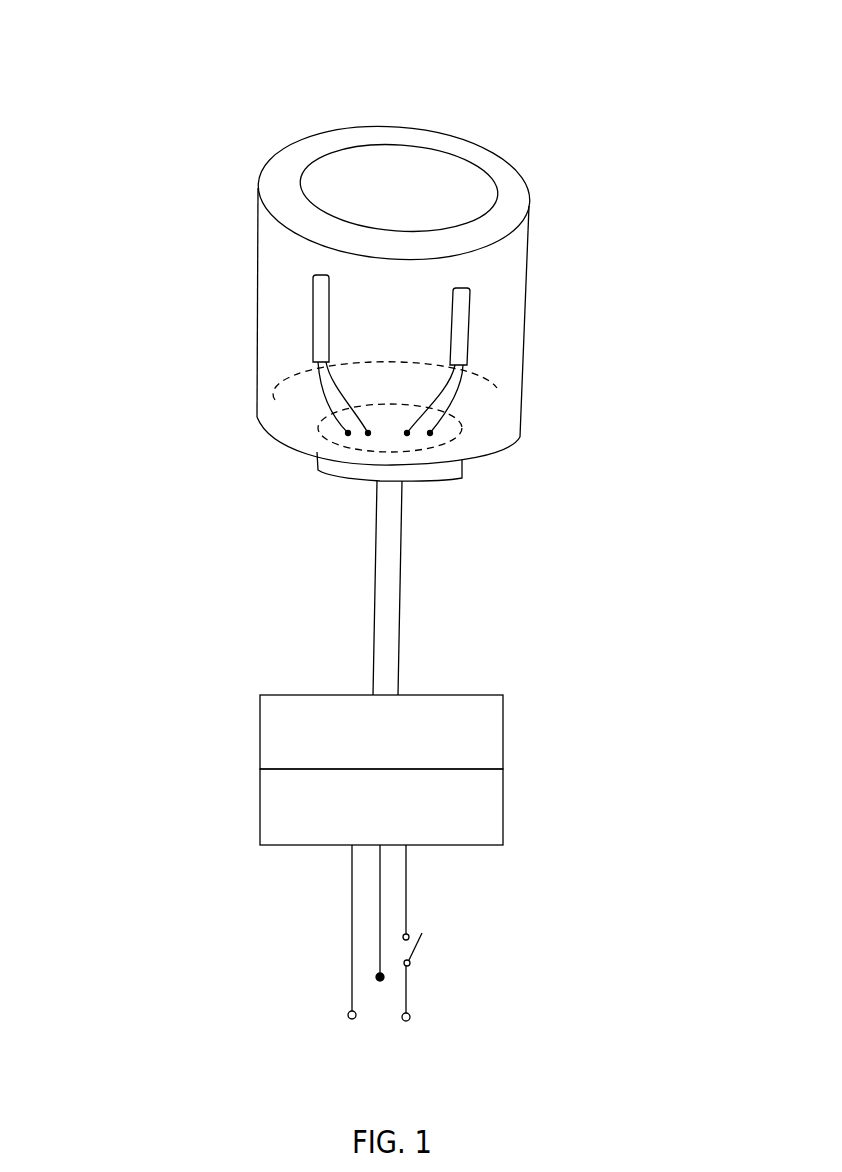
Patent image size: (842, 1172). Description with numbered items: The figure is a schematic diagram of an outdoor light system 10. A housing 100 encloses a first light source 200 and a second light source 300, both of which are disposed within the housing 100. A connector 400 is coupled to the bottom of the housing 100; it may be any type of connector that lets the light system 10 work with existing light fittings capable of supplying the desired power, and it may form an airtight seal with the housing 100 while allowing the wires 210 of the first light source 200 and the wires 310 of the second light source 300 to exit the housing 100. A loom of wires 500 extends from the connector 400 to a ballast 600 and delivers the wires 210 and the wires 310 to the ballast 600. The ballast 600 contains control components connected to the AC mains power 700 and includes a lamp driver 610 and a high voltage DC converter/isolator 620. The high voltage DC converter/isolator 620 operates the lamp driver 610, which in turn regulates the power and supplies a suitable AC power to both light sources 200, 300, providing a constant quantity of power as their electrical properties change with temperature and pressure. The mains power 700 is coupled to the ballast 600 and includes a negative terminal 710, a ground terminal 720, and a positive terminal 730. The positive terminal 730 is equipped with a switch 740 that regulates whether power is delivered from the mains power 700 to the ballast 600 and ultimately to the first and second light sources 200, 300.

The light system 10 is at (140, 110).
The housing 100 is at (203, 227).
The first light source 200 is at (312, 337).
The wires of the first light source 210 is at (262, 413).
The second light source 300 is at (470, 338).
The wires of the second light source 310 is at (427, 408).
The connector 400 is at (458, 478).
The loom of wires 500 is at (382, 539).
The ballast 600 is at (533, 672).
The lamp driver 610 is at (503, 728).
The high voltage DC converter/isolator 620 is at (503, 807).
The mains power 700 is at (295, 993).
The negative terminal 710 is at (350, 1019).
The ground terminal 720 is at (382, 982).
The positive terminal 730 is at (411, 1018).
The switch 740 is at (423, 935).